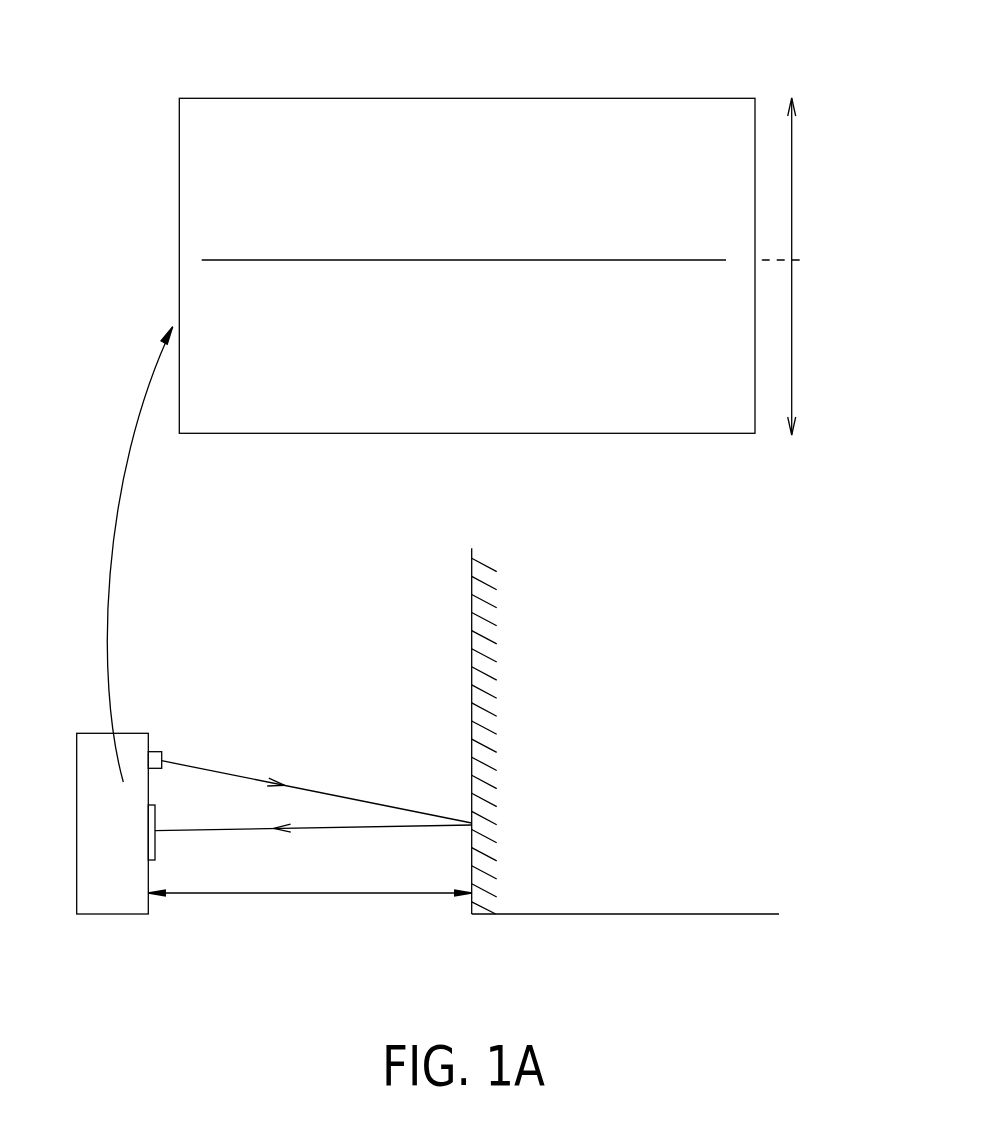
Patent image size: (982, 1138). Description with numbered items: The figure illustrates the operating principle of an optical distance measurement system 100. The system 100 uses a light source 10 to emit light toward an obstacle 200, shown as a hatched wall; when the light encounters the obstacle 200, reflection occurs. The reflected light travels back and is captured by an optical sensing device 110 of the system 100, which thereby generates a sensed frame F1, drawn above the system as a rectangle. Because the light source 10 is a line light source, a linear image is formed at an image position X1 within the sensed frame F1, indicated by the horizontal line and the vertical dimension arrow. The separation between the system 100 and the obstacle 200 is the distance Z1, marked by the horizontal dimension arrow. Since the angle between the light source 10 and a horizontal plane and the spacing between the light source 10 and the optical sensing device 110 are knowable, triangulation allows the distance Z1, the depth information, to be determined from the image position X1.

The sensed frame F1 is at (503, 80).
The image position X1 is at (802, 266).
The optical distance measurement system 100 is at (143, 722).
The light source 10 is at (155, 752).
The optical sensing device 110 is at (155, 820).
The obstacle 200 is at (521, 645).
The distance Z1 is at (309, 879).